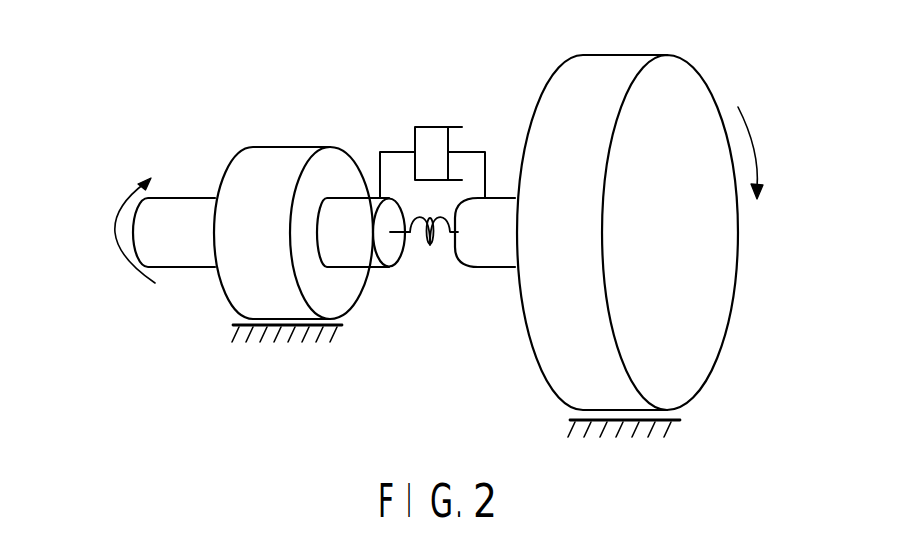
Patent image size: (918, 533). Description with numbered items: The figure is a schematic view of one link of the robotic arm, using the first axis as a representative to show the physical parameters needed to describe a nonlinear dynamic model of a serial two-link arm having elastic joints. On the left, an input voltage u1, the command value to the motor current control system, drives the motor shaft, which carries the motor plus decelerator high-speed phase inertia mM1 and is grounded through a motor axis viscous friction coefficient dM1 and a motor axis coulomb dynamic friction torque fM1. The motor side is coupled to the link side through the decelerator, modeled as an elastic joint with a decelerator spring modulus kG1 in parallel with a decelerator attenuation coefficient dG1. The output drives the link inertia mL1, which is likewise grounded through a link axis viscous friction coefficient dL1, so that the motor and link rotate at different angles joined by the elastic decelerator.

The input voltage u1 is at (136, 216).
The motor and decelerator high-speed phase inertia mM1 is at (293, 216).
The motor axis viscous friction coefficient dM1 is at (287, 356).
The motor axis coulomb dynamic friction torque fM1 is at (281, 427).
The decelerator attenuation coefficient dG1 is at (432, 144).
The decelerator spring modulus kG1 is at (434, 272).
The link inertia mL1 is at (627, 215).
The link axis viscous friction coefficient dL1 is at (624, 446).